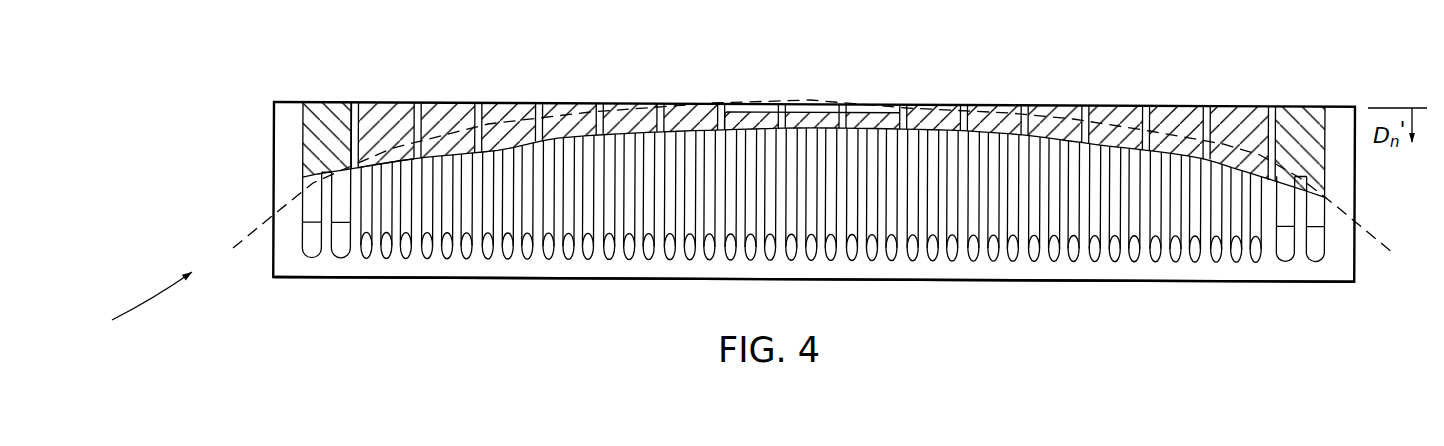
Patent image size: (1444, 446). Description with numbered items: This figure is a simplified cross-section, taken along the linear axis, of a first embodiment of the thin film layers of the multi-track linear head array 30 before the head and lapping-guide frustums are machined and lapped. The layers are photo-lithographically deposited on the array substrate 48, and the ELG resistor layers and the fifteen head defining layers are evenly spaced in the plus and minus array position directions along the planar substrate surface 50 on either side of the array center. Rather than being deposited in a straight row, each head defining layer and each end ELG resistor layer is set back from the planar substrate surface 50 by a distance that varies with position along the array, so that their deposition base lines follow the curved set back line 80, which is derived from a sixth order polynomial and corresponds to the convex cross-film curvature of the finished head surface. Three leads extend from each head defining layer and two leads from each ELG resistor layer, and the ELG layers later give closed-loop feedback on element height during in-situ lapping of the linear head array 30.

The linear head array 30 is at (132, 304).
The array substrate 48 is at (282, 274).
The planar substrate surface 50 is at (275, 100).
The set back line 80 is at (265, 225).